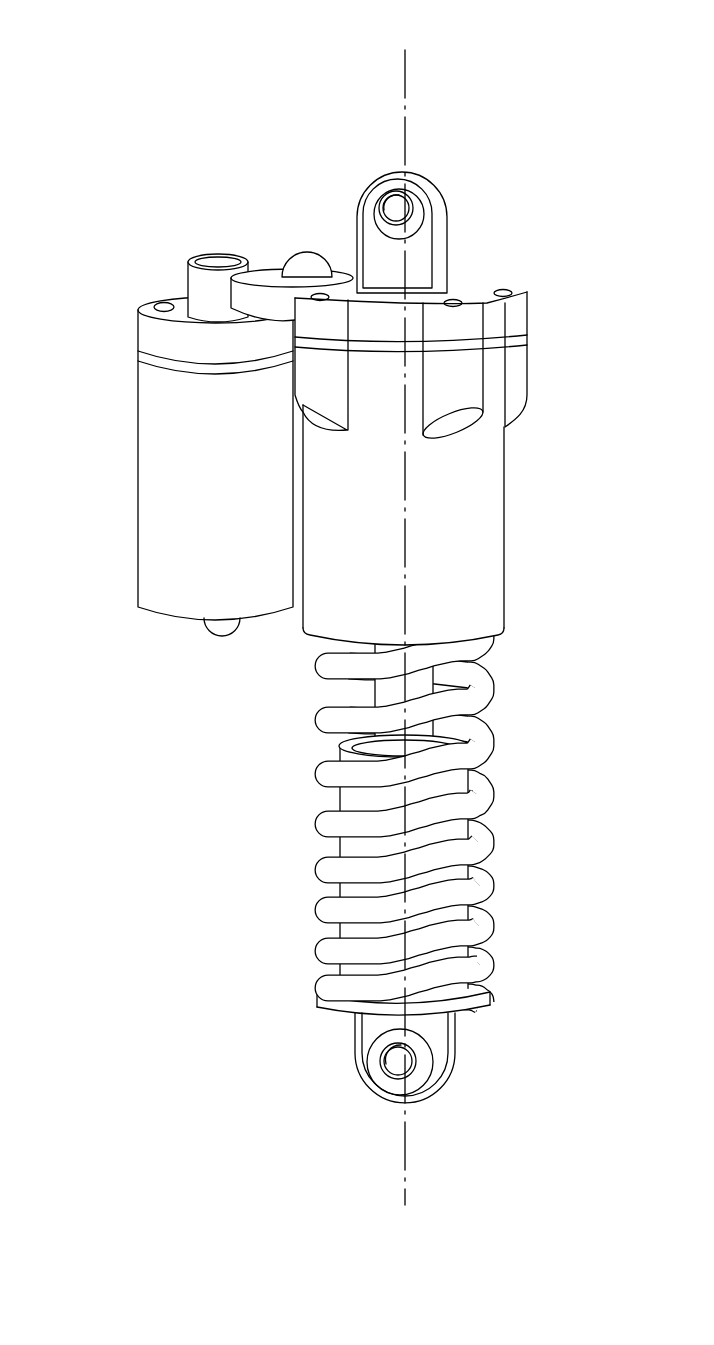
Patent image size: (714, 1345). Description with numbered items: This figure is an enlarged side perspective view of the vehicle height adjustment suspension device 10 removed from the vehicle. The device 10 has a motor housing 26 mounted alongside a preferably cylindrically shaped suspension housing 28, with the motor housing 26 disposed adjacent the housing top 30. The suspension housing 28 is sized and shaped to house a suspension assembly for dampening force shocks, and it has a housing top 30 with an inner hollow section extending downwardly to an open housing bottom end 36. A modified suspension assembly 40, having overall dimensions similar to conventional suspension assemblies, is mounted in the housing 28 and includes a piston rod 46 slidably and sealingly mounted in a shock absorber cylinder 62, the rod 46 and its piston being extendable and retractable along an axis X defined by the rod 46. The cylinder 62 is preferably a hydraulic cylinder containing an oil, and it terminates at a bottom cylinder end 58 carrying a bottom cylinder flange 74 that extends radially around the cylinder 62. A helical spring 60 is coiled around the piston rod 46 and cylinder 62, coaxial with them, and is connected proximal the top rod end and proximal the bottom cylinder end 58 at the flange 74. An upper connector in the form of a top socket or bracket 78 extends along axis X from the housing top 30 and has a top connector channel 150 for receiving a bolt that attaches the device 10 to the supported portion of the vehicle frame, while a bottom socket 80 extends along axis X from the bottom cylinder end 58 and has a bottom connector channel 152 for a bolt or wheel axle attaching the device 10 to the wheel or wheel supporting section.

The vehicle height adjustment suspension device 10 is at (120, 217).
The motor housing 26 is at (155, 432).
The suspension housing 28 is at (527, 486).
The housing top 30 is at (477, 283).
The open housing bottom end 36 is at (505, 650).
The modified suspension assembly 40 is at (552, 730).
The piston rod 46 is at (372, 695).
The bottom cylinder end 58 is at (470, 1015).
The helical spring 60 is at (496, 760).
The shock absorber cylinder 62 is at (336, 846).
The bottom cylinder flange 74 is at (497, 997).
The top socket or bracket 78 is at (440, 237).
The bottom socket 80 is at (443, 1080).
The top connector channel 150 is at (386, 212).
The bottom connector channel 152 is at (389, 1066).
The axis X is at (407, 88).